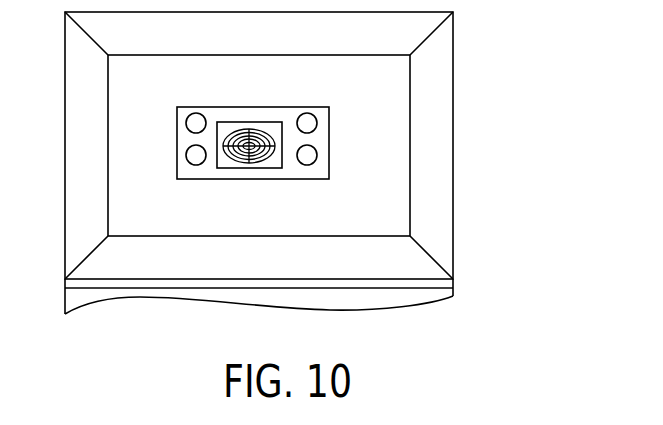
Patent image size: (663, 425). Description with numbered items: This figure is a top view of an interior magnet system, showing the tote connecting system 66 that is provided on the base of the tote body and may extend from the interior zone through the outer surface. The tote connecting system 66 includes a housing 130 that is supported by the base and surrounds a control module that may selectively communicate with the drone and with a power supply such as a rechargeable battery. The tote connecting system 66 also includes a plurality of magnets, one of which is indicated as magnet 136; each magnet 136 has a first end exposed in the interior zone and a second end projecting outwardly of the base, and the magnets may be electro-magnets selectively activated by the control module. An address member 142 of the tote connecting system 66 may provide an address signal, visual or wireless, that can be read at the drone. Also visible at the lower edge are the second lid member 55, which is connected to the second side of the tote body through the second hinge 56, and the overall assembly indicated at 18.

The housing assembly 18 is at (503, 242).
The second lid member 55 is at (407, 305).
The second hinge 56 is at (453, 283).
The tote connecting system 66 is at (337, 143).
The housing 130 is at (178, 165).
The magnet 136 is at (309, 157).
The address member 142 is at (248, 138).